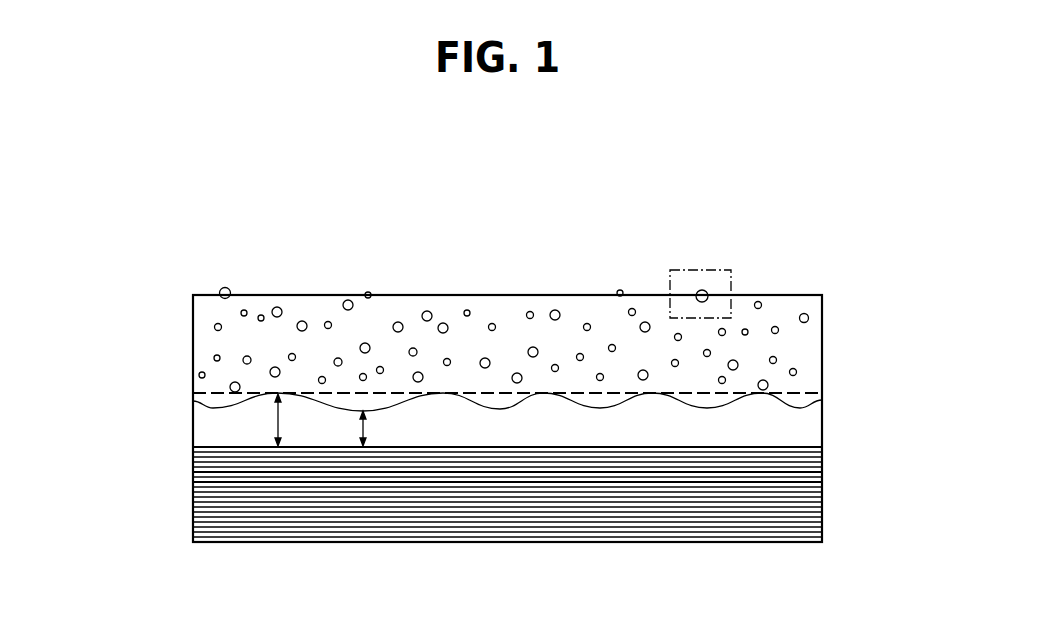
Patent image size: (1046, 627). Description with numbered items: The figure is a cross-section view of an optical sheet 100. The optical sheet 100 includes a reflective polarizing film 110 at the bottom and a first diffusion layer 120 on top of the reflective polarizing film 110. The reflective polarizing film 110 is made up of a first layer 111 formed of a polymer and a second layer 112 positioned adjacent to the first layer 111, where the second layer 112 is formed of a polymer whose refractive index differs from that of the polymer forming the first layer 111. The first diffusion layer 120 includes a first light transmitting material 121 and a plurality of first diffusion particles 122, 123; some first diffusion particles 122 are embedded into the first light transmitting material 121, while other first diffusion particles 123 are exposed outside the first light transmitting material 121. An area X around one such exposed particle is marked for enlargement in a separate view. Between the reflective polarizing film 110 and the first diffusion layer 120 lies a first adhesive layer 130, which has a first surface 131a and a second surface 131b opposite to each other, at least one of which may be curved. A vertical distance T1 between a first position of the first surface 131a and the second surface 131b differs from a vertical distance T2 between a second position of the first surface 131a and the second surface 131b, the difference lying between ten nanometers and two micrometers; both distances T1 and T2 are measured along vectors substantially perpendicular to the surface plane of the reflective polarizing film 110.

The optical sheet 100 is at (254, 166).
The reflective polarizing film 110 is at (514, 494).
The first layer 111 is at (808, 474).
The second layer 112 is at (808, 480).
The first diffusion layer 120 is at (514, 293).
The first light transmitting material 121 is at (805, 356).
The first diffusion particles 122 is at (809, 318).
The first diffusion particles 123 is at (706, 291).
The first adhesive layer 130 is at (497, 421).
The first surface 131a is at (193, 405).
The second surface 131b is at (193, 446).
The vertical distance T1 is at (293, 420).
The vertical distance T2 is at (380, 428).
The area X is at (700, 270).